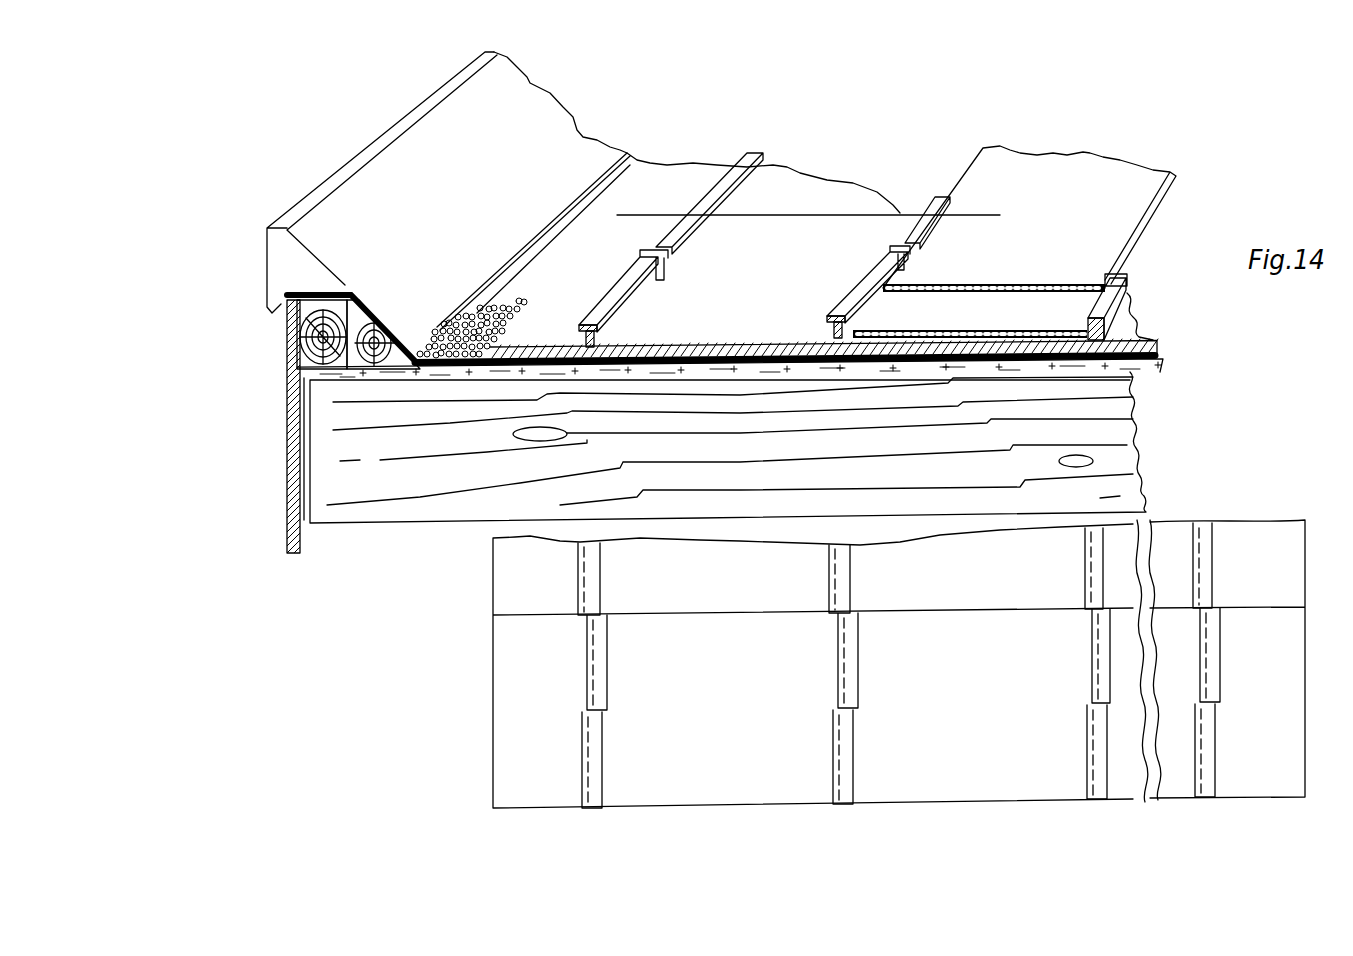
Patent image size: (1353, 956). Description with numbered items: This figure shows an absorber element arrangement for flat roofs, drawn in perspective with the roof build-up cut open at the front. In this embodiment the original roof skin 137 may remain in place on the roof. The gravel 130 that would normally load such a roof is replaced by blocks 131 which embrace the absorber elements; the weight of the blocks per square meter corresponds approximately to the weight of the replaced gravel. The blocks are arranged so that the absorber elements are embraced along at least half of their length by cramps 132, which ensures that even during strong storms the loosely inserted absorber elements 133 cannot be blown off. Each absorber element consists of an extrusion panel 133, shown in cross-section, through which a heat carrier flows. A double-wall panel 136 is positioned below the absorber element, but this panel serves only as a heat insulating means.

The gravel 130 is at (437, 340).
The blocks 131 is at (565, 290).
The cramps 132 is at (700, 217).
The absorber element 133 is at (1113, 187).
The double-wall panel 136 is at (1060, 312).
The original roof skin 137 is at (442, 366).